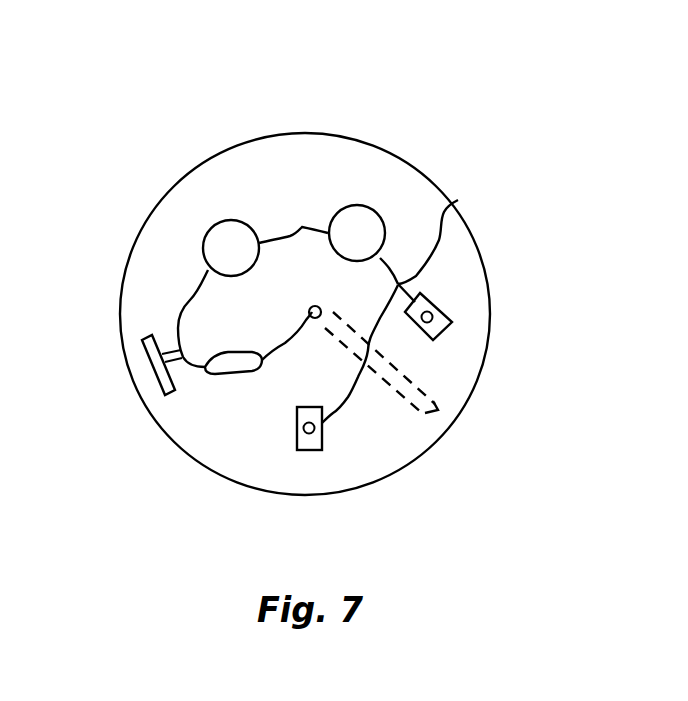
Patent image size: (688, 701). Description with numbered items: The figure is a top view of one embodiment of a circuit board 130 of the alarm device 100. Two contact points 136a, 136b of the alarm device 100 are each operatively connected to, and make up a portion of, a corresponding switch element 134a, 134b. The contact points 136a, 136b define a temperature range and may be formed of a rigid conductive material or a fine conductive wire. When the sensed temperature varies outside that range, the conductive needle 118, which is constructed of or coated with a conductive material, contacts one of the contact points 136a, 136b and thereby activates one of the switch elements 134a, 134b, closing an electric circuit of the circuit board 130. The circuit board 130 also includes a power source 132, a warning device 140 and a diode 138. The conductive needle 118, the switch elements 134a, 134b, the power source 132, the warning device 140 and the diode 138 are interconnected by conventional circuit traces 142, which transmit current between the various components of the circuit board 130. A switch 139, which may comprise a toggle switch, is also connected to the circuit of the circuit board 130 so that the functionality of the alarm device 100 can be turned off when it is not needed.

The alarm device 100 is at (198, 116).
The circuit board 130 is at (377, 147).
The power source 132 is at (357, 205).
The warning device 140 is at (230, 220).
The circuit traces 142 is at (302, 227).
The diode 138 is at (243, 375).
The switch 139 is at (158, 378).
The contact point 136a is at (447, 310).
The contact point 136b is at (297, 427).
The switch element 134a is at (453, 318).
The switch element 134b is at (310, 450).
The conductive needle 118 is at (440, 410).